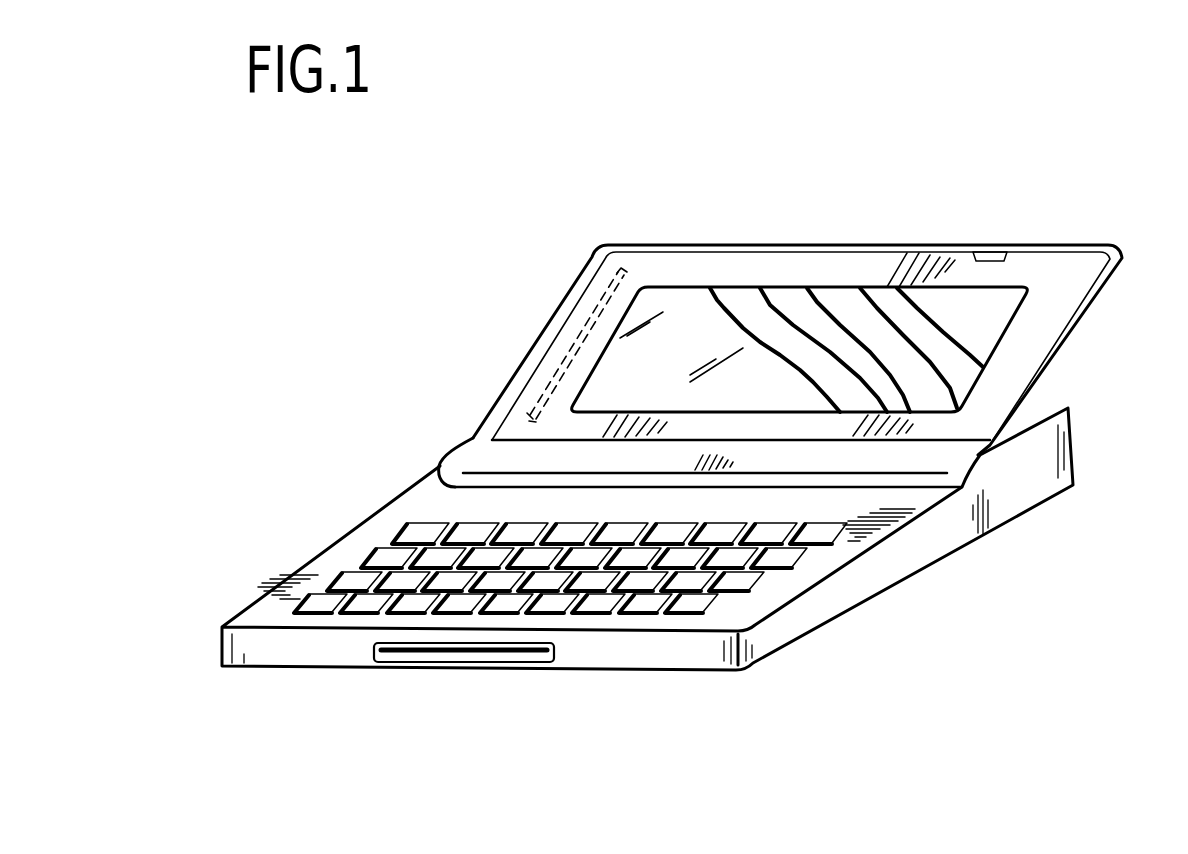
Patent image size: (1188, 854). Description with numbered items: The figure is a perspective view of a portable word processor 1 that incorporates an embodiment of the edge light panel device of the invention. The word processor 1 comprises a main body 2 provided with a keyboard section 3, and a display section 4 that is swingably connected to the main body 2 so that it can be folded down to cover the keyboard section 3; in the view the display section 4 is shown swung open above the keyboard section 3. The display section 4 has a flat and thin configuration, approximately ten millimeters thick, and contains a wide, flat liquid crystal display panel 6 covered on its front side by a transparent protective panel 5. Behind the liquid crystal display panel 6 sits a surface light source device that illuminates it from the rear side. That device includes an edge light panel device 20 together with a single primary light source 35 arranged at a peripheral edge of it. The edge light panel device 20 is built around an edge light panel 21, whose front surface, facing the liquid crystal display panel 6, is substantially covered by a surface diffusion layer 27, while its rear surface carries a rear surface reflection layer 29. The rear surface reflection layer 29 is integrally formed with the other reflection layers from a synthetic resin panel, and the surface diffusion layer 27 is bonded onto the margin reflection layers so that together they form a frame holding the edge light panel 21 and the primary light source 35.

The portable word processor 1 is at (1000, 553).
The main body 2 is at (843, 607).
The keyboard section 3 is at (387, 557).
The display section 4 is at (1057, 323).
The transparent protective panel 5 is at (663, 305).
The liquid crystal display panel 6 is at (727, 283).
The edge light panel device 20 is at (910, 170).
The surface diffusion layer 27 is at (790, 295).
The edge light panel 21 is at (840, 295).
The rear surface reflection layer 29 is at (889, 300).
The primary light source 35 is at (562, 355).